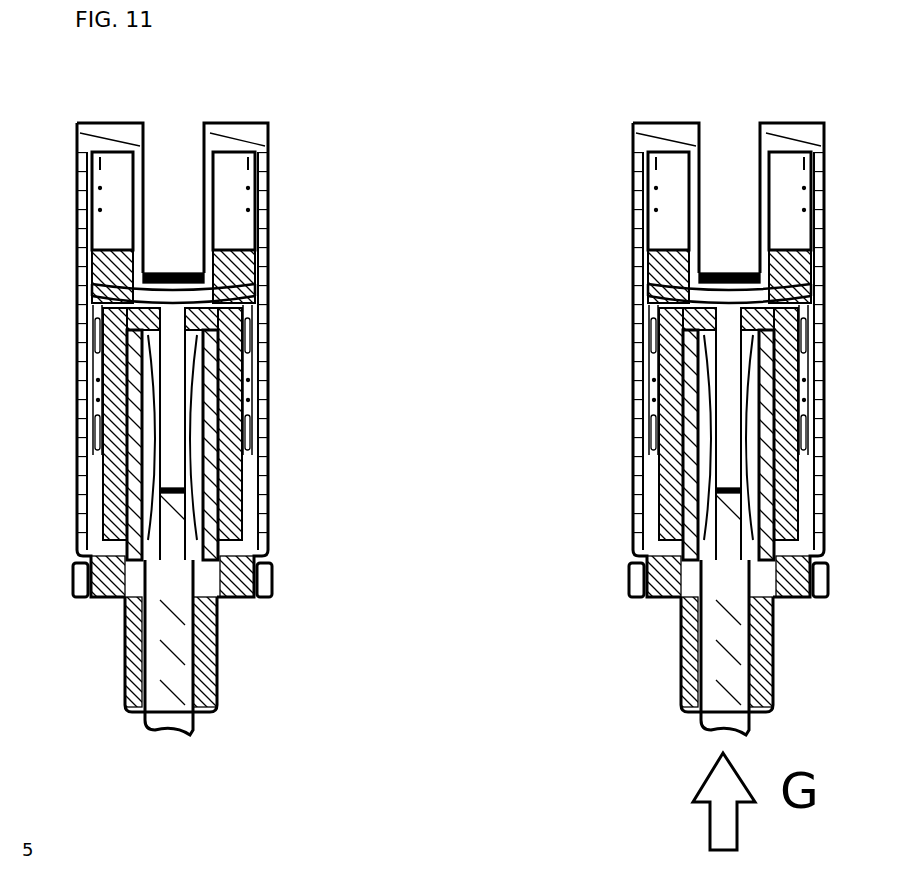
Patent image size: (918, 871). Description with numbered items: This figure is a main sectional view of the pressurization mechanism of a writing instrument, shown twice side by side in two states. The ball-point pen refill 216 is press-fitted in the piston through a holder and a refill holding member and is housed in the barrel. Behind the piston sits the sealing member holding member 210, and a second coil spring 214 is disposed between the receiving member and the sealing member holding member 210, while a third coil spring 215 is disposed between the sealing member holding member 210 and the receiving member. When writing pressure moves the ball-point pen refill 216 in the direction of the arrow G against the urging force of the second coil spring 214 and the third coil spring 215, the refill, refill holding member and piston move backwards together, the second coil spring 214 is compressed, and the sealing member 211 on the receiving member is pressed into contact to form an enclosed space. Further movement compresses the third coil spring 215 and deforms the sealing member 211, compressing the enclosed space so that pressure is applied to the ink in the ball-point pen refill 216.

The third coil spring 215 is at (633, 168).
The sealing member 211 is at (640, 232).
The sealing member holding member 210 is at (640, 283).
The second coil spring 214 is at (632, 387).
The ball-point pen refill 216 is at (632, 502).